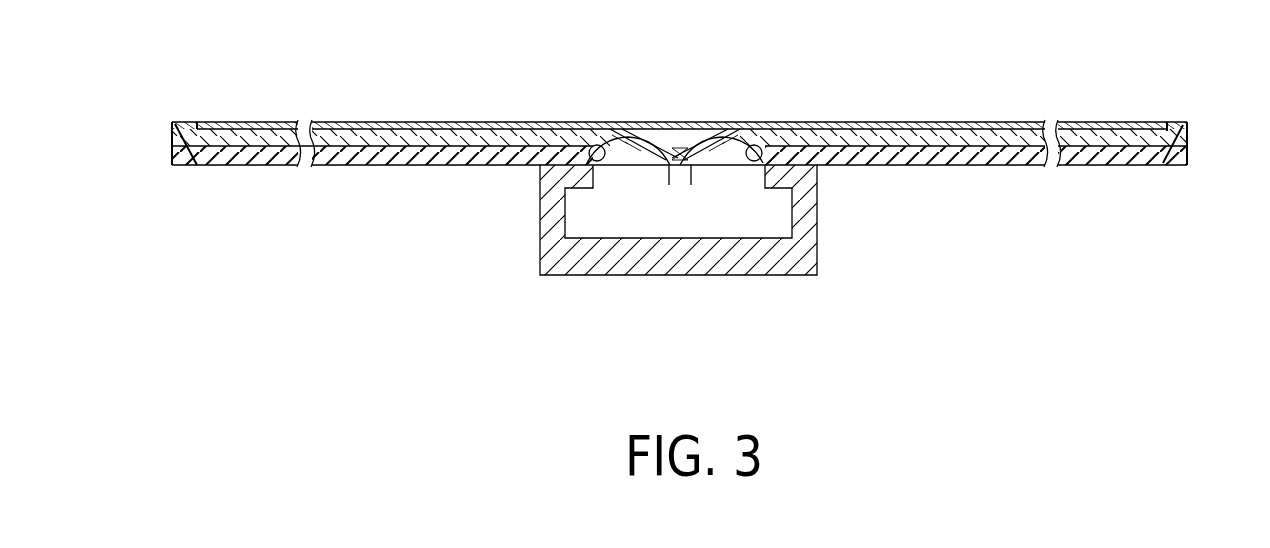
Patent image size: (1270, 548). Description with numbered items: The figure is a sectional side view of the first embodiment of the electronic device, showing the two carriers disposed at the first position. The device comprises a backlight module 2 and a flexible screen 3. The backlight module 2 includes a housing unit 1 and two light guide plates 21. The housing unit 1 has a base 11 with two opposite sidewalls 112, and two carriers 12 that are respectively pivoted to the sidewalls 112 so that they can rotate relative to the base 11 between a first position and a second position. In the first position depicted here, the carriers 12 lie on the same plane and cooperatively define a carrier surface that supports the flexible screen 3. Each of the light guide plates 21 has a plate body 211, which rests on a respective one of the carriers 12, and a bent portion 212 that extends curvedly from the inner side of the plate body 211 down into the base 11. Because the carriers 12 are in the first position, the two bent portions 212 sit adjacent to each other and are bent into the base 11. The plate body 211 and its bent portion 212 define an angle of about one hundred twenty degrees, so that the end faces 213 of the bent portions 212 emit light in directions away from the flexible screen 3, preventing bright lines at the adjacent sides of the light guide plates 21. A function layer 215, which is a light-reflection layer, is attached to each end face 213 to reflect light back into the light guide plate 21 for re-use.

The housing unit 1 is at (624, 259).
The base 11 is at (603, 265).
The sidewalls 112 is at (592, 203).
The carriers 12 is at (270, 166).
The backlight module 2 is at (683, 199).
The light guide plates 21 is at (175, 147).
The plate body 211 is at (413, 121).
The bent portion 212 is at (678, 147).
The end faces 213 is at (640, 140).
The function layer 215 is at (691, 183).
The flexible screen 3 is at (780, 118).